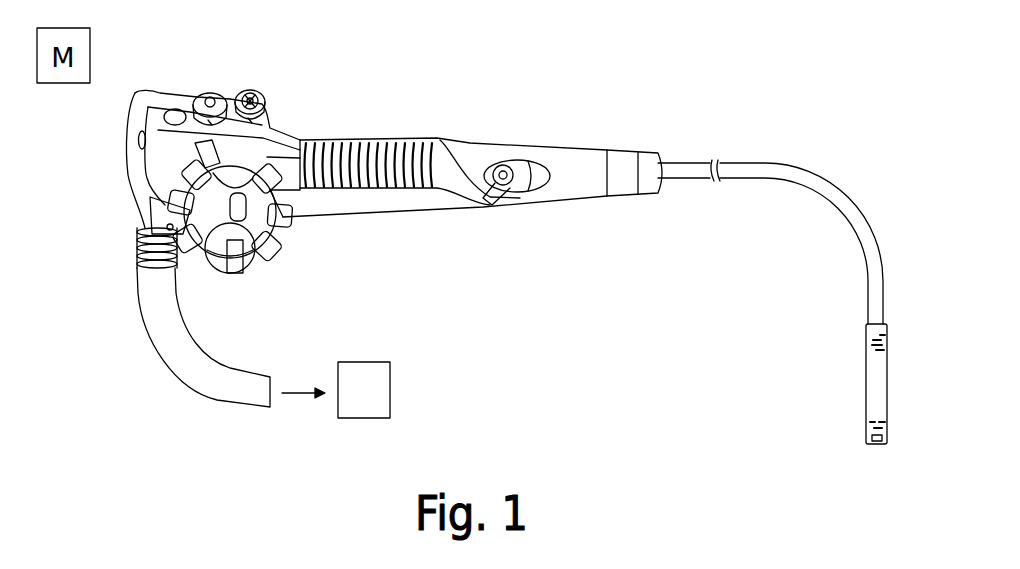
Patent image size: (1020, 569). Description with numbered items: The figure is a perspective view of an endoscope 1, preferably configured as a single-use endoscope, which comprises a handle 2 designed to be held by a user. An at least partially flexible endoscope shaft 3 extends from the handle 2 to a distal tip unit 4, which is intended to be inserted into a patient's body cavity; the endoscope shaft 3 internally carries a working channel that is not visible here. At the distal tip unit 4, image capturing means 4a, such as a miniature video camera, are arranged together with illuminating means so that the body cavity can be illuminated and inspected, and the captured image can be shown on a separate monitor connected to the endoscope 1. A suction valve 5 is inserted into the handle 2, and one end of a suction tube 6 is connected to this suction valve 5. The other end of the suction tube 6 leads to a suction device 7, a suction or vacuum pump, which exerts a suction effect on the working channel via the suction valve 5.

The endoscope 1 is at (575, 83).
The handle 2 is at (381, 139).
The endoscope shaft 3 is at (822, 196).
The distal tip unit 4 is at (864, 428).
The image capturing means 4a is at (878, 445).
The suction valve 5 is at (203, 100).
The suction tube 6 is at (137, 295).
The suction device 7 is at (365, 423).